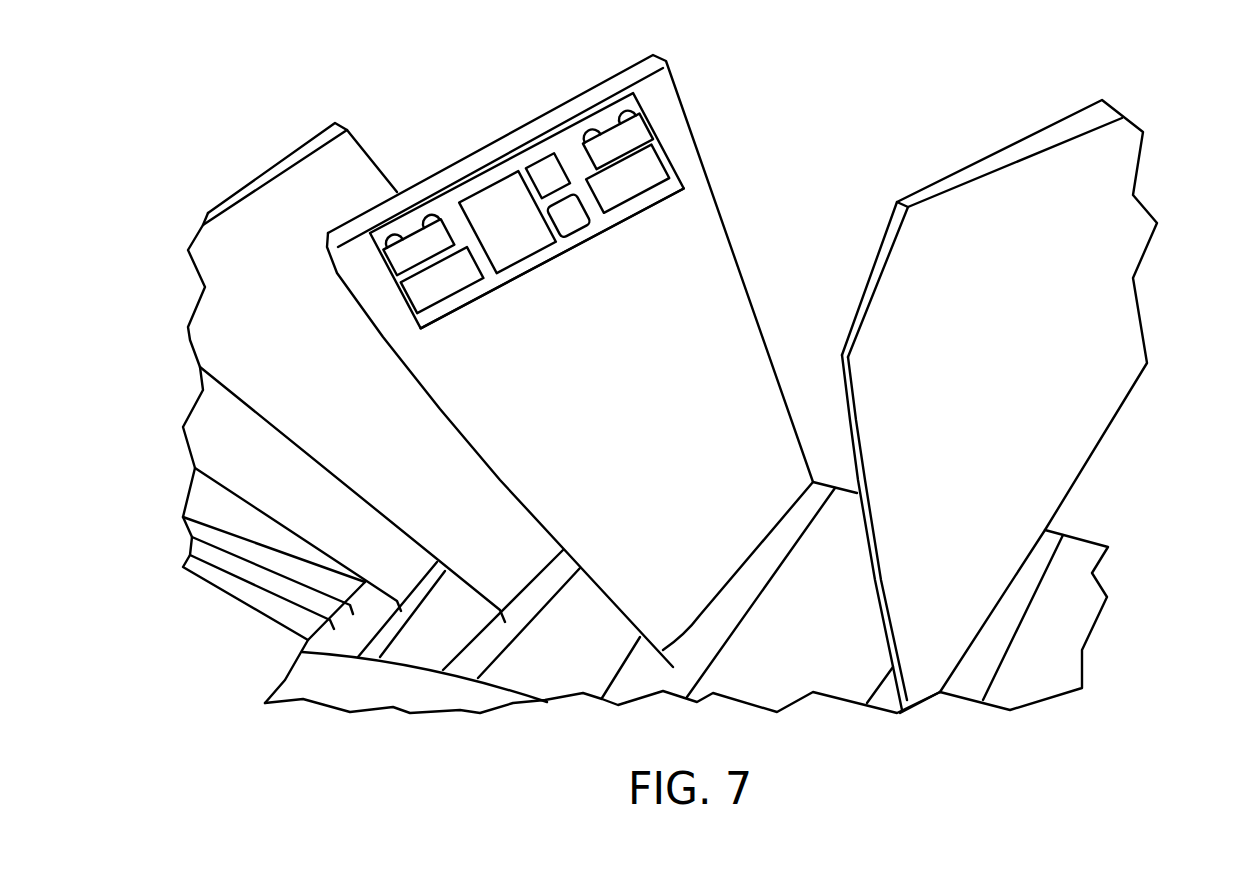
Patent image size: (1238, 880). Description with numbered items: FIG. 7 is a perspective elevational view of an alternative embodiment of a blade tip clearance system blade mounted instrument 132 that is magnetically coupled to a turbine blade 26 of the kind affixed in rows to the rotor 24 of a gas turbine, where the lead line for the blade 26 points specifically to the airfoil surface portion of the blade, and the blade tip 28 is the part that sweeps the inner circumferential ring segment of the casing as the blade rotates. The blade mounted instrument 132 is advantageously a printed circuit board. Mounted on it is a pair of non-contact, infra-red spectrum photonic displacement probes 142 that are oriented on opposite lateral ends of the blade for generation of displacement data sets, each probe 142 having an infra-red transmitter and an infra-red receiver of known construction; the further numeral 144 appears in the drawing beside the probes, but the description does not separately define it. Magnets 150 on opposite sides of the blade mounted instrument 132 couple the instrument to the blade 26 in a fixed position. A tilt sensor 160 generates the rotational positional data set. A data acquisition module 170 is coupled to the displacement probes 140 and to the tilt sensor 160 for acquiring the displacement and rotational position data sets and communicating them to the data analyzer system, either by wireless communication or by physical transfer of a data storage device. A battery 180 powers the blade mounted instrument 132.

The rotor 24 is at (428, 730).
The turbine blade 26 is at (710, 305).
The blade tip 28 is at (297, 152).
The blade mounted instrument 132 is at (382, 282).
The displacement probes 140 is at (588, 121).
The infra-red spectrum photonic displacement probe 142 is at (388, 240).
The second notch 144 is at (433, 217).
The magnet 150 is at (461, 296).
The tilt sensor 160 is at (553, 170).
The data acquisition module 170 is at (555, 262).
The battery 180 is at (580, 220).